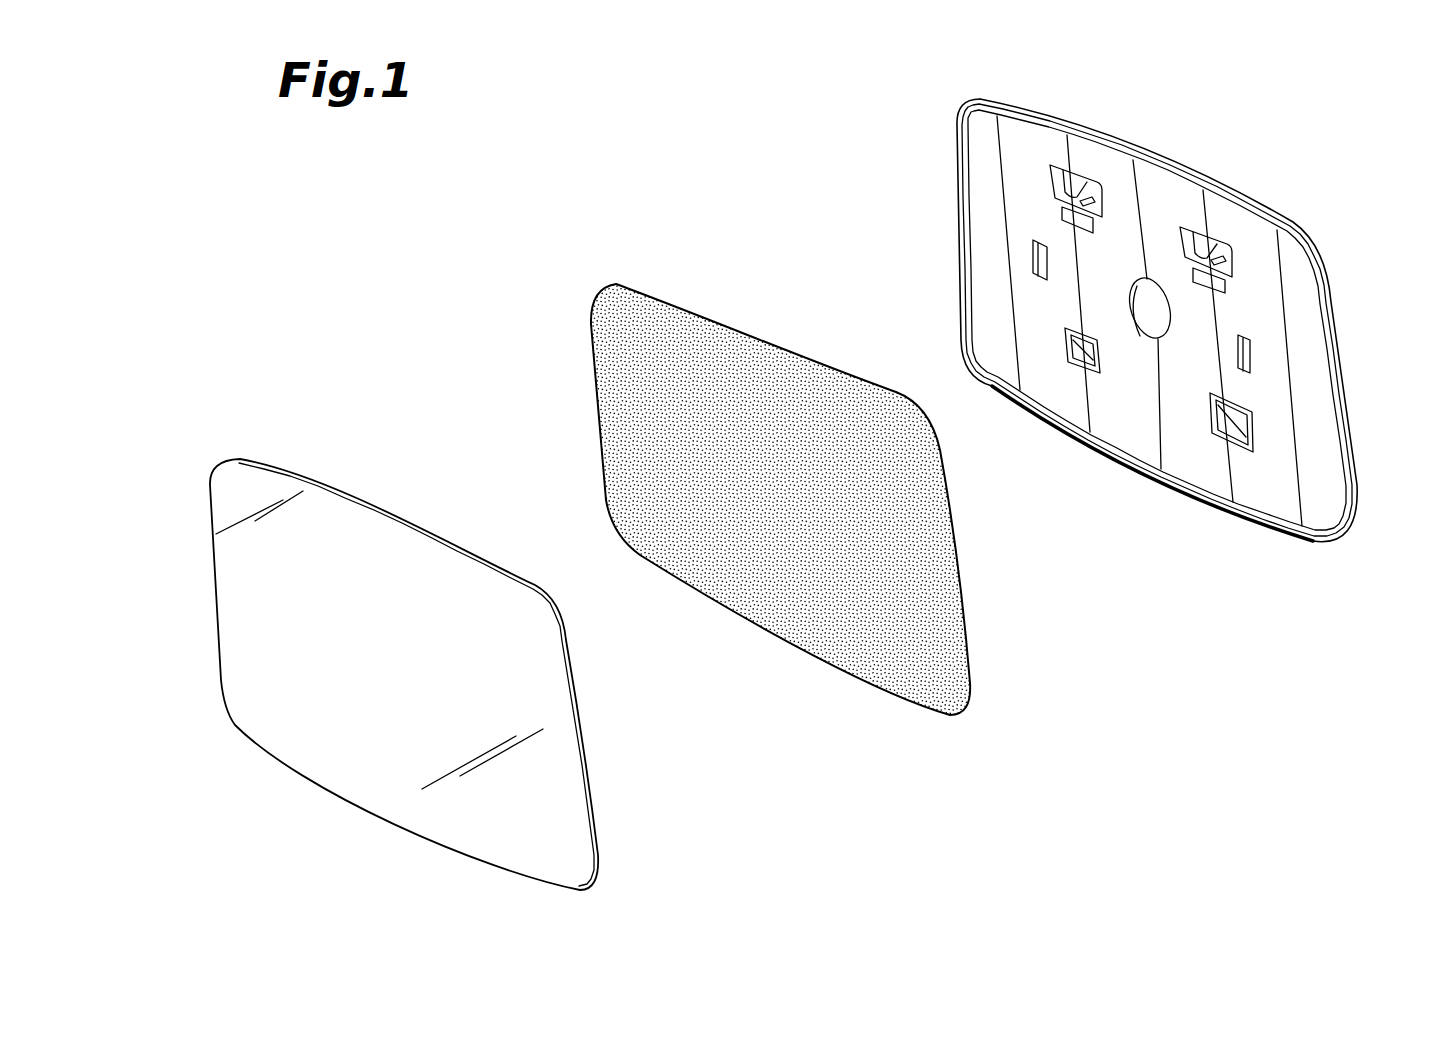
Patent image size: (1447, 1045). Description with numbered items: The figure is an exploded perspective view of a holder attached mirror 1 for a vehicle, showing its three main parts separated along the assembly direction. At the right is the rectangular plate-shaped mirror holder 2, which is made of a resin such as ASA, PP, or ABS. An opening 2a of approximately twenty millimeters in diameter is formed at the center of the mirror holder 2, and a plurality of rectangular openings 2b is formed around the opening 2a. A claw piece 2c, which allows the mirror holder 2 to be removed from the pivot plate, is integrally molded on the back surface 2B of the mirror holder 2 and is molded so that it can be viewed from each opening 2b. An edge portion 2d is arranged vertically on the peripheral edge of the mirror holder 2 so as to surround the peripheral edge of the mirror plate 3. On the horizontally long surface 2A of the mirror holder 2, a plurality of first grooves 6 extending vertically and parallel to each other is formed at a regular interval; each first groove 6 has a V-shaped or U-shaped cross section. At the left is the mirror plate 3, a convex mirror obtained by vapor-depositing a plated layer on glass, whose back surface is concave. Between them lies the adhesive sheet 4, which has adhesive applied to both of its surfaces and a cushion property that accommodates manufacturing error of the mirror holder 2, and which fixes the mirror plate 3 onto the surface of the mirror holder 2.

The holder attached mirror 1 is at (1178, 762).
The mirror holder 2 is at (935, 145).
The surface 2A is at (1313, 455).
The back surface 2B is at (1356, 497).
The opening 2a is at (1140, 300).
The rectangular opening 2b is at (1200, 245).
The claw piece 2c is at (1088, 185).
The edge portion 2d is at (1177, 168).
The mirror plate 3 is at (178, 528).
The adhesive sheet 4 is at (548, 340).
The first groove 6 is at (1283, 300).